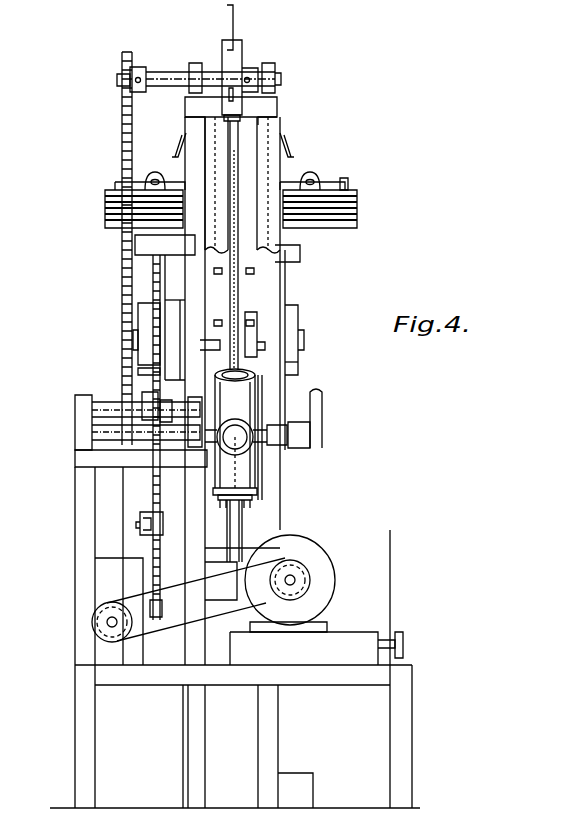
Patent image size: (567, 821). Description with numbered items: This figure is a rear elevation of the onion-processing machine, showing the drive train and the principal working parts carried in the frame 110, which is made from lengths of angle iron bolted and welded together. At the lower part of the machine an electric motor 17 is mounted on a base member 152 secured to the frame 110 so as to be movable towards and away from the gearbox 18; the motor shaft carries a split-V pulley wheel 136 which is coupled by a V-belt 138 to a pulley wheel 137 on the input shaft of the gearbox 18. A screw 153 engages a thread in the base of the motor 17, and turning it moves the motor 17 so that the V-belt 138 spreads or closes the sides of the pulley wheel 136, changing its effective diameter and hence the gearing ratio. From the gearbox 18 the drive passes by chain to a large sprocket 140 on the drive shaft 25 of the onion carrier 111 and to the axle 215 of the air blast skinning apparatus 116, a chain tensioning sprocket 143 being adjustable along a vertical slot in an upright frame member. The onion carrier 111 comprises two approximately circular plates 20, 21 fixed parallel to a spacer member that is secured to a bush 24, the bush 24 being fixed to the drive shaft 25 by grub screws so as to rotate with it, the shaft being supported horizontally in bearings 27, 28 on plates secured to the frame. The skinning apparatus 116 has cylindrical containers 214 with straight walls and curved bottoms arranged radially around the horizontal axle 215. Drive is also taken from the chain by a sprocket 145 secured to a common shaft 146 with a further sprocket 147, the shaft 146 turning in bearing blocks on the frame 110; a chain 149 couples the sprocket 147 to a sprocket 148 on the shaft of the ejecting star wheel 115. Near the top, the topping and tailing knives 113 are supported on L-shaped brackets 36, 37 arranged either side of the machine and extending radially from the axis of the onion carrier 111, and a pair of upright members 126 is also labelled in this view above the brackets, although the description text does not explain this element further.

The frame 110 is at (73, 678).
The common shaft 146 is at (105, 408).
The sprocket 145 is at (163, 412).
The sprocket 147 is at (142, 400).
The chain 149 is at (121, 116).
The sprocket 148 is at (137, 68).
The ejecting star wheel 115 is at (244, 47).
The tubes 126 is at (281, 134).
The onion carrier 111 is at (247, 283).
The L-shaped bracket 36 is at (105, 210).
The L-shaped bracket 37 is at (357, 213).
The topping and tailing knives 113 is at (347, 183).
The bearing 28 is at (175, 310).
The sprocket 140 is at (142, 320).
The chain tensioning sprocket 143 is at (140, 522).
The bearing 27 is at (298, 305).
The drive shaft 25 is at (304, 336).
The bush 24 is at (252, 350).
The container 214 is at (240, 478).
The axle 215 is at (262, 425).
The apparatus for air blast skinning 116 is at (257, 488).
The circular plate 20 is at (228, 512).
The circular plate 21 is at (262, 530).
The electric motor 17 is at (322, 592).
The pulley wheel 136 is at (305, 575).
The pulley wheel 137 is at (98, 630).
The V-belt 138 is at (168, 628).
The gearbox 18 is at (100, 570).
The base member 152 is at (352, 655).
The screw 153 is at (400, 638).